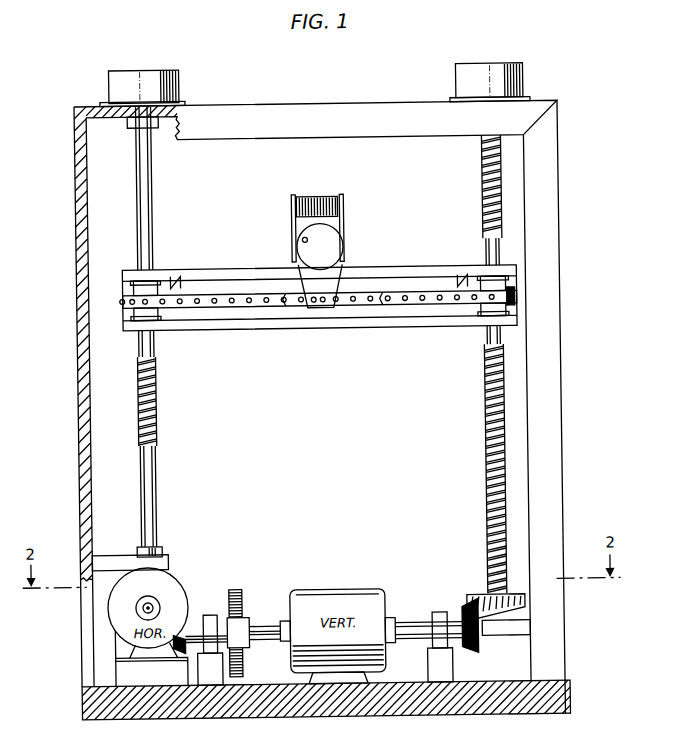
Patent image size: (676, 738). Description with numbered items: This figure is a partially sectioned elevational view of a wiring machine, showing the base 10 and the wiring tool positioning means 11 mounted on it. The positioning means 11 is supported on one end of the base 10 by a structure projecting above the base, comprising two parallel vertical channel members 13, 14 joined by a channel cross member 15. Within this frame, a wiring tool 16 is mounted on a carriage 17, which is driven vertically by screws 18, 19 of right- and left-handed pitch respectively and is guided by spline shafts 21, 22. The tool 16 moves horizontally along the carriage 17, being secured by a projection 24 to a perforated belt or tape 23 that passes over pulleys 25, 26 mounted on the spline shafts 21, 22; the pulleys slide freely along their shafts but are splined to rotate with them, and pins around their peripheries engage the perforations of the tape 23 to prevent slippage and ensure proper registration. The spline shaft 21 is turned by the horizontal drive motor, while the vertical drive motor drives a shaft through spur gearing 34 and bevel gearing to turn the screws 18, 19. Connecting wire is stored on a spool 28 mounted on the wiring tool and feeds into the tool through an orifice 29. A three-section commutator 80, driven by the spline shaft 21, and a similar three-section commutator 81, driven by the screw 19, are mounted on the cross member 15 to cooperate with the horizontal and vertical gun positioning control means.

The base 10 is at (556, 697).
The wiring tool positioning means 11 is at (328, 436).
The vertical channel member 13 is at (76, 404).
The vertical channel member 14 is at (564, 385).
The channel cross member 15 is at (320, 108).
The wiring tool 16 is at (295, 255).
The carriage 17 is at (367, 334).
The screw 18 is at (152, 388).
The screw 19 is at (481, 386).
The spline shaft 21 is at (152, 184).
The spline shaft 22 is at (482, 350).
The perforated belt or tape 23 is at (220, 300).
The projection 24 is at (324, 280).
The pulley 25 is at (168, 291).
The pulley 26 is at (509, 303).
The spool of wire 28 is at (315, 202).
The orifice 29 is at (305, 244).
The spur gearing 34 is at (236, 616).
The three-section commutator 80 is at (180, 90).
The three-section commutator 81 is at (524, 90).